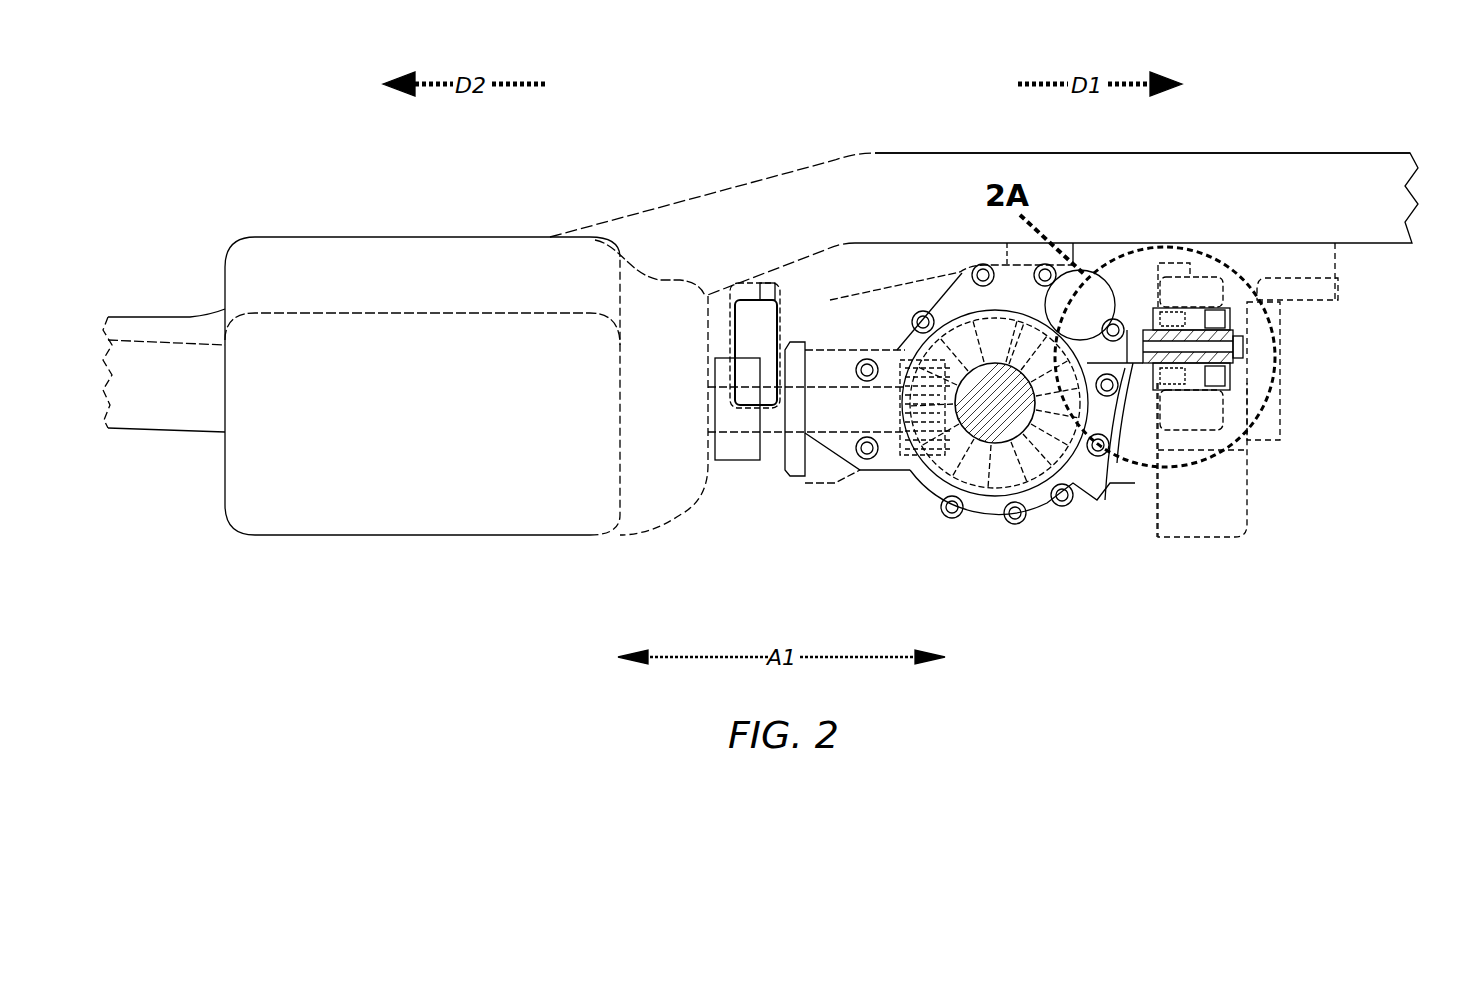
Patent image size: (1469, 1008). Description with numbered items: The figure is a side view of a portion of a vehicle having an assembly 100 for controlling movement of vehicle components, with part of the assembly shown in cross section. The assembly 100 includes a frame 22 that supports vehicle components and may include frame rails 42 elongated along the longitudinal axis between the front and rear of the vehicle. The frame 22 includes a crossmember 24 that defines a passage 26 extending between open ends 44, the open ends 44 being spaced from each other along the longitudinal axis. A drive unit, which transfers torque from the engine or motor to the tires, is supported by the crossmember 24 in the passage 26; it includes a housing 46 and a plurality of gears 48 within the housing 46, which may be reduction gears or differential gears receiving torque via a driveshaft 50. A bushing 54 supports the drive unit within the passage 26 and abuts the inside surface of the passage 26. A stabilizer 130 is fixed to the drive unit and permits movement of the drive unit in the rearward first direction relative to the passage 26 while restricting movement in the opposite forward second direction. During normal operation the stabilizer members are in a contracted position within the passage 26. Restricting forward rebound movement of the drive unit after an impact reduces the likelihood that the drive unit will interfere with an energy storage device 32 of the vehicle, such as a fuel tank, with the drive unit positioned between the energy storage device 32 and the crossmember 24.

The assembly 100 is at (1385, 314).
The frame 22 is at (1238, 143).
The frame rails 42 is at (1325, 182).
The open ends 44 is at (1160, 285).
The passage 26 is at (1233, 368).
The stabilizer 130 is at (1232, 380).
The crossmember 24 is at (1225, 430).
The bushing 54 is at (1155, 395).
The gears 48 is at (920, 378).
The housing 46 is at (930, 490).
The driveshaft 50 is at (175, 405).
The energy storage device 32 is at (407, 535).